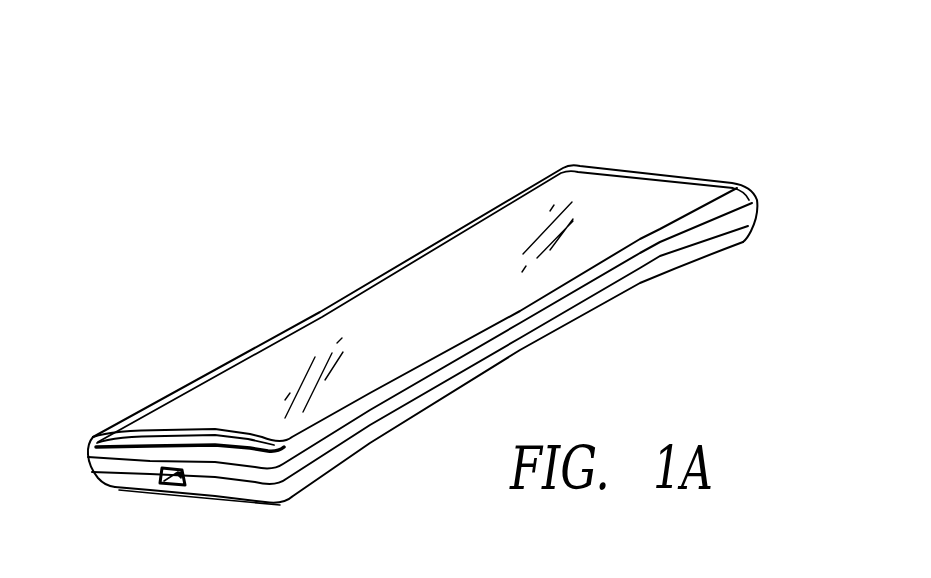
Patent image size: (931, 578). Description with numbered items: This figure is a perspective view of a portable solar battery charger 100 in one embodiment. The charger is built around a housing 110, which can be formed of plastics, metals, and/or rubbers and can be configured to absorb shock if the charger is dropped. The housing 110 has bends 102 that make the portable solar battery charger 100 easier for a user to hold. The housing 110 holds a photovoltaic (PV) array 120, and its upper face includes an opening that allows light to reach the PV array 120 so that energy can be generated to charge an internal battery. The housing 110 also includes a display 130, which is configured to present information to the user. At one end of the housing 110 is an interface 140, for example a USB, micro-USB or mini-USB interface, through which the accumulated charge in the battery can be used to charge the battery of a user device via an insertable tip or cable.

The portable solar battery charger 100 is at (623, 73).
The bends 102 is at (511, 320).
The housing 110 is at (698, 233).
The photovoltaic (PV) array 120 is at (555, 197).
The display 130 is at (202, 441).
The interface 140 is at (172, 485).